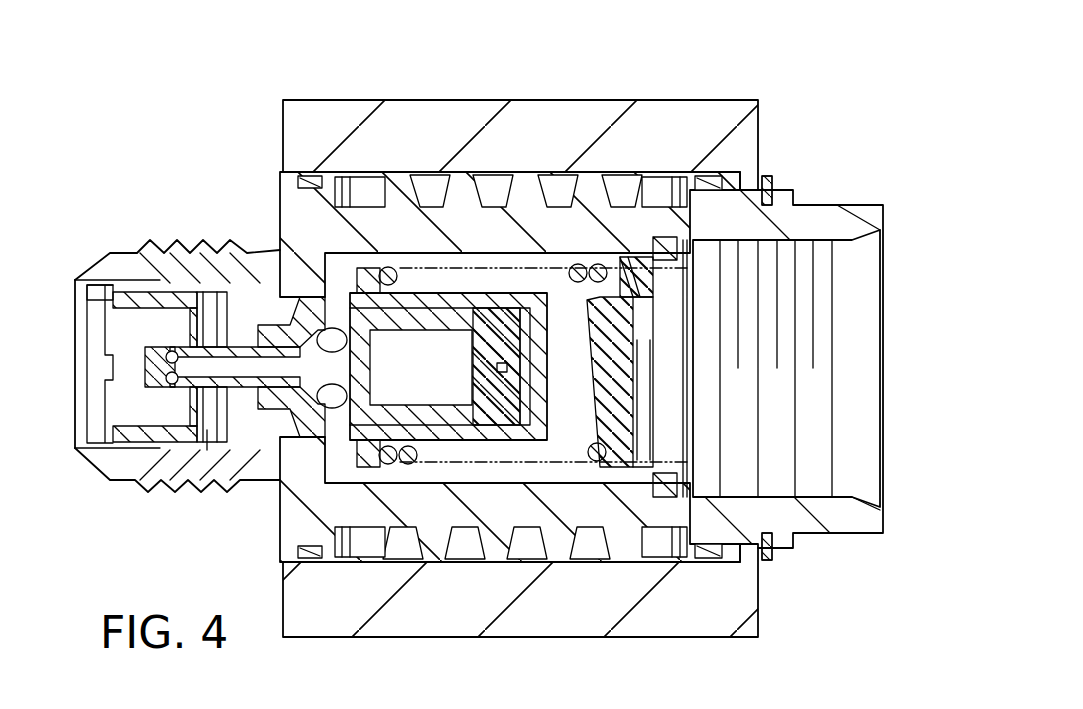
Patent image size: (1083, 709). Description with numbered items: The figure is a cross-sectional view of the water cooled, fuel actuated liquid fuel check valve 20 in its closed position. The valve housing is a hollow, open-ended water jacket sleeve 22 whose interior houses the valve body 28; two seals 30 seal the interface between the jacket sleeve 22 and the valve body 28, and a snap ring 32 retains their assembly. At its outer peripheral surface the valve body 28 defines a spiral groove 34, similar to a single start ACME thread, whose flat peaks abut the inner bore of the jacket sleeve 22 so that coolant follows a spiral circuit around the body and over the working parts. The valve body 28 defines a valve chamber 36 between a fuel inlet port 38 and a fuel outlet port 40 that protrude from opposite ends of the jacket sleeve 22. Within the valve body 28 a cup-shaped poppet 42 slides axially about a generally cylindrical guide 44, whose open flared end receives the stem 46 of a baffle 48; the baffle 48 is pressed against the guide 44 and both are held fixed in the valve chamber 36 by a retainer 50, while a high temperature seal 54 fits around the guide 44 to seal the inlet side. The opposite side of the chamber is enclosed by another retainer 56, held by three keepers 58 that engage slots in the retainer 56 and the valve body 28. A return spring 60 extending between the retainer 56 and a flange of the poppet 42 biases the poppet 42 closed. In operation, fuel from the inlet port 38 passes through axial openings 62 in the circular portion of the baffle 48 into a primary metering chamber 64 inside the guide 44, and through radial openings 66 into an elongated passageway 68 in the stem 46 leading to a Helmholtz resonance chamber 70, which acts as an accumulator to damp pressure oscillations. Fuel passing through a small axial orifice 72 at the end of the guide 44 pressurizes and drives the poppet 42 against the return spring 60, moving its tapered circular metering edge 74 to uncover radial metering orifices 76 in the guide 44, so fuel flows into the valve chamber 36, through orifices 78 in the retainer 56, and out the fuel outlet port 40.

The liquid fuel check valve 20 is at (732, 21).
The water jacket sleeve 22 is at (652, 640).
The valve body 28 is at (830, 203).
The seals 30 is at (308, 177).
The snap ring 32 is at (770, 182).
The helical groove 34 is at (626, 190).
The valve chamber 36 is at (503, 483).
The fuel inlet port 38 is at (78, 452).
The fuel outlet port 40 is at (872, 488).
The poppet 42 is at (550, 390).
The guide 44 is at (258, 450).
The baffle stem 46 is at (247, 450).
The baffle 48 is at (180, 392).
The retainer 50 is at (100, 296).
The high temperature seal 54 is at (280, 300).
The retainer 56 is at (626, 315).
The keepers 58 is at (675, 246).
The return spring 60 is at (410, 464).
The axial openings 62 is at (210, 430).
The primary metering chamber 64 is at (275, 333).
The radial openings 66 is at (170, 352).
The elongated passageway 68 is at (353, 366).
The Helmholtz resonance chamber 70 is at (464, 397).
The axial orifice 72 is at (548, 347).
The tapered circular metering edge 74 is at (292, 300).
The radial metering orifices 76 is at (333, 445).
The orifices 78 is at (622, 262).